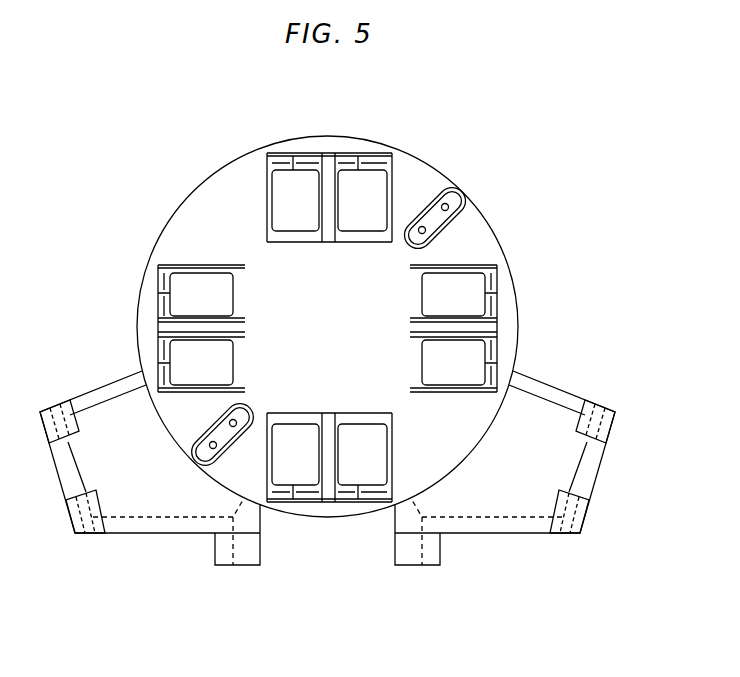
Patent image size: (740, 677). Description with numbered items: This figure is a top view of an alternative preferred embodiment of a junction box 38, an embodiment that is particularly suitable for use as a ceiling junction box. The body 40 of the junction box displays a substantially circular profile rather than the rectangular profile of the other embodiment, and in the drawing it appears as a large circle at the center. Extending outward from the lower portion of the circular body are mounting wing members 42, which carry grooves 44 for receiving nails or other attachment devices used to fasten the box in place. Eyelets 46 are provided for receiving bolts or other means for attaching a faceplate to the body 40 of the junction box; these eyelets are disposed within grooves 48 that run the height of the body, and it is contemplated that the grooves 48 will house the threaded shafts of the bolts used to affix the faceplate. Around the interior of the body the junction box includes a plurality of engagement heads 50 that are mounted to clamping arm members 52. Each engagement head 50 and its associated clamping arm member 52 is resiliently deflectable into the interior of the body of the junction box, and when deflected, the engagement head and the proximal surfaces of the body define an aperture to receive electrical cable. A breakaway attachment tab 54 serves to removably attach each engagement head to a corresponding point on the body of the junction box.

The junction box 38 is at (134, 218).
The body 40 is at (331, 316).
The mounting wing members 42 is at (141, 475).
The grooves 44 is at (613, 412).
The eyelets 46 is at (452, 218).
The grooves 48 is at (452, 185).
The engagement heads 50 is at (383, 163).
The clamping arm members 52 is at (370, 193).
The breakaway attachment tab 54 is at (363, 165).